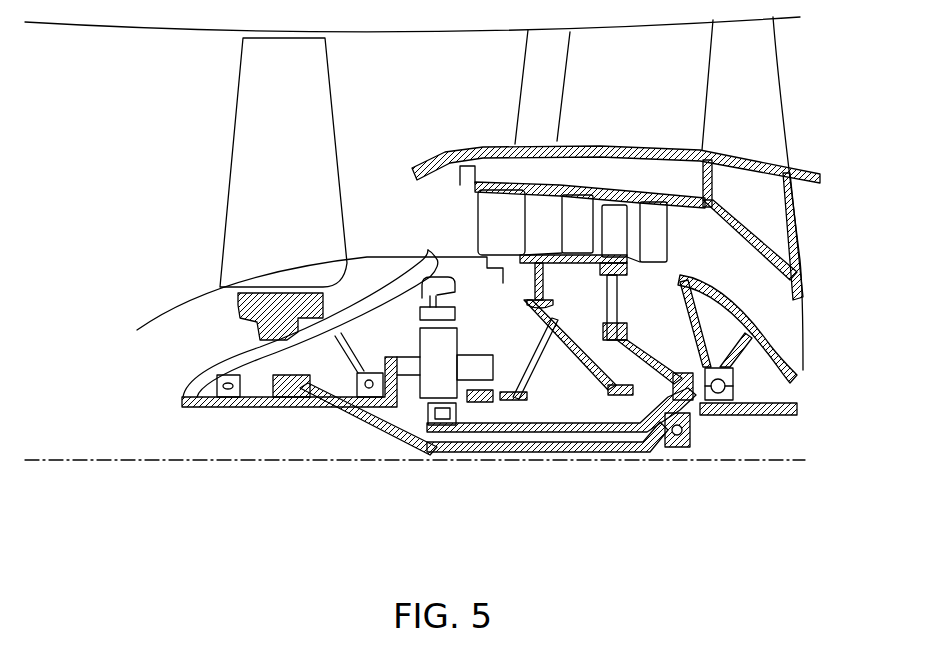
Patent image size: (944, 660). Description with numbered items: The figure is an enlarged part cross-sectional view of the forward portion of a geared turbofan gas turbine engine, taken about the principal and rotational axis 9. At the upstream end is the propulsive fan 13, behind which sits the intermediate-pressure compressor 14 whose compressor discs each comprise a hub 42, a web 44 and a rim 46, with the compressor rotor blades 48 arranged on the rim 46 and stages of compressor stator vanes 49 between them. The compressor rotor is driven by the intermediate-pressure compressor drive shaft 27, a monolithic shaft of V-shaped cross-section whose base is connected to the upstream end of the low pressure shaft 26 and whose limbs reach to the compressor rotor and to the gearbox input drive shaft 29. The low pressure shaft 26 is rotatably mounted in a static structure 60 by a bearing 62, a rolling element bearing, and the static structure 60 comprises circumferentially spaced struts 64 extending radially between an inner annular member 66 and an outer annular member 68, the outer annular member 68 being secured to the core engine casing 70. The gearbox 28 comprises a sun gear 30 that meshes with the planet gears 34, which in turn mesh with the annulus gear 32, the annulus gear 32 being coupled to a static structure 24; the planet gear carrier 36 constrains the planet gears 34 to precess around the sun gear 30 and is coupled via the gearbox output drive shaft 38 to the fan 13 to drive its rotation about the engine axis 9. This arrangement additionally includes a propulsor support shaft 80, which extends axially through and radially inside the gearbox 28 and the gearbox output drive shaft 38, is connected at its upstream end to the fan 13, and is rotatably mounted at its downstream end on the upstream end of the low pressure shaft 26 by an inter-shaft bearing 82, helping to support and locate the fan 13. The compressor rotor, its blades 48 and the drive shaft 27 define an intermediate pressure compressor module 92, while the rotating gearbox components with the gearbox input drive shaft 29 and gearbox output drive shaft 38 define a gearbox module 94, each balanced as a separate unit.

The principal and rotational axis 9 is at (27, 462).
The propulsive fan 13 is at (250, 133).
The intermediate-pressure compressor 14 is at (614, 212).
The static structure 24 is at (452, 230).
The low pressure shaft 26 is at (767, 416).
The intermediate-pressure compressor drive shaft 27 is at (600, 355).
The gearbox 28 is at (410, 402).
The gearbox input drive shaft 29 is at (560, 432).
The sun gear 30 is at (437, 420).
The annulus gear 32 is at (447, 312).
The planet gears 34 is at (440, 365).
The planet gear carrier 36 is at (358, 430).
The gearbox output drive shaft 38 is at (335, 403).
The hub 42 is at (583, 320).
The web 44 is at (533, 273).
The rim 46 is at (460, 182).
The compressor rotor blades 48 is at (535, 217).
The compressor stator vanes 49 is at (578, 212).
The static structure 60 is at (800, 263).
The bearing 62 is at (744, 378).
The struts 64 is at (775, 308).
The inner annular member 66 is at (775, 347).
The outer annular member 68 is at (785, 240).
The core engine casing 70 is at (690, 147).
The propulsor support shaft 80 is at (620, 447).
The bearing 82 is at (690, 433).
The intermediate pressure compressor module 92 is at (538, 195).
The gearbox module 94 is at (360, 438).